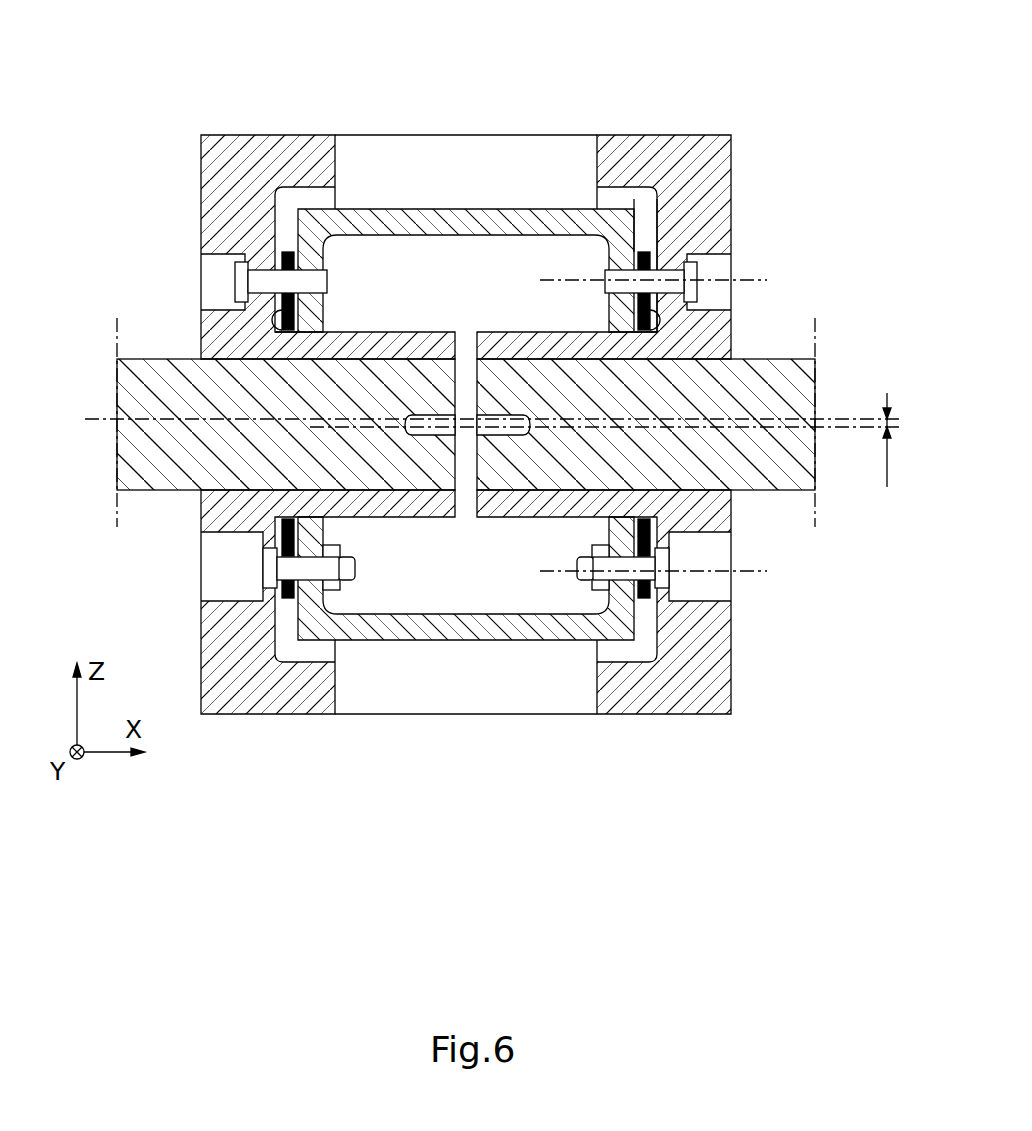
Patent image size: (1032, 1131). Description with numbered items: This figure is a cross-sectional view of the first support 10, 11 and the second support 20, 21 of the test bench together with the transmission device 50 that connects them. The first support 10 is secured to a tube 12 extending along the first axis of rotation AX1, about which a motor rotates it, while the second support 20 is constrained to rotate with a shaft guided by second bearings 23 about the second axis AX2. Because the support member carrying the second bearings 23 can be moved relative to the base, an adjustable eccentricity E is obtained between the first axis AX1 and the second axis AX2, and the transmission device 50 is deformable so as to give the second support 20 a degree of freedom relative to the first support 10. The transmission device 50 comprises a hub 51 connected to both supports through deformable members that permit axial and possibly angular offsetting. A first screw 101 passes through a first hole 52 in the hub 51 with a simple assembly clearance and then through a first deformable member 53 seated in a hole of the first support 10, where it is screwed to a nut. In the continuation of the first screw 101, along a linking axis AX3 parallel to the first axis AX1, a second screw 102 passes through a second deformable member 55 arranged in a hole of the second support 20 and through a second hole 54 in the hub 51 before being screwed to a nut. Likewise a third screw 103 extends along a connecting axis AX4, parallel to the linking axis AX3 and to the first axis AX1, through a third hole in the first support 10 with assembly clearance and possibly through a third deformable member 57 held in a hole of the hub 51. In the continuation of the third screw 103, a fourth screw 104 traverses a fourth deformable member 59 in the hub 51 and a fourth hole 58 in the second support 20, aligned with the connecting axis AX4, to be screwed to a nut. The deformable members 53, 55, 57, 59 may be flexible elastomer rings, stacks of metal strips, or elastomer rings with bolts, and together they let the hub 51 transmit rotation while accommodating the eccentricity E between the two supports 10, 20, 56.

The first support 10 is at (685, 397).
The housing part 11 is at (713, 162).
The tube 12 is at (798, 399).
The second support 20 is at (380, 367).
The housing part 21 is at (252, 157).
The second bearings 23 is at (138, 403).
The transmission device 50 is at (630, 256).
The hub 51 is at (530, 209).
The first hole 52 is at (598, 683).
The first deformable member 53 is at (645, 600).
The second hole 54 is at (342, 683).
The second deformable member 55 is at (286, 600).
The bolt 56 is at (749, 257).
The third deformable member 57 is at (647, 252).
The fourth hole 58 is at (173, 277).
The fourth deformable member 59 is at (287, 345).
The first screw 101 is at (622, 570).
The second screw 102 is at (310, 567).
The third screw 103 is at (688, 292).
The fourth screw 104 is at (243, 283).
The first axis of rotation AX1 is at (835, 427).
The second axis AX2 is at (850, 419).
The linking axis AX3 is at (767, 571).
The connecting axis AX4 is at (760, 280).
The eccentricity E is at (897, 440).